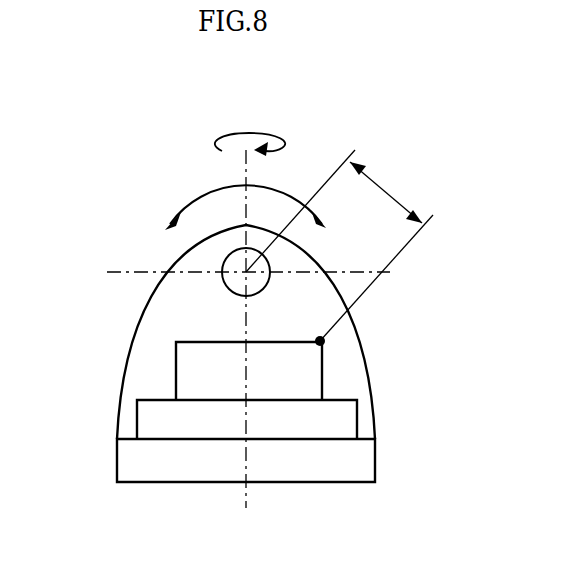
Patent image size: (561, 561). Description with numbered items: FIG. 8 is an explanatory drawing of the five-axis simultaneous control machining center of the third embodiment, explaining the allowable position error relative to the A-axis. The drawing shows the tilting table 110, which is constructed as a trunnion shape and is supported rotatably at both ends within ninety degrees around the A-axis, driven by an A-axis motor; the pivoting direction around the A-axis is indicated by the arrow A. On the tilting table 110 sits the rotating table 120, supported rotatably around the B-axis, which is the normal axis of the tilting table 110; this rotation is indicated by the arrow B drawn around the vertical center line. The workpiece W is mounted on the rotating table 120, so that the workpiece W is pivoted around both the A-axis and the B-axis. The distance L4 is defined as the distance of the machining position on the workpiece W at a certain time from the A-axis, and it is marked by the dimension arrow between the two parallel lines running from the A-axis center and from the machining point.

The tilting table 110 is at (170, 261).
The rotating table 120 is at (158, 400).
The workpiece W is at (187, 341).
The A-axis A is at (245, 200).
The B-axis B is at (250, 132).
The distance L4 is at (339, 245).